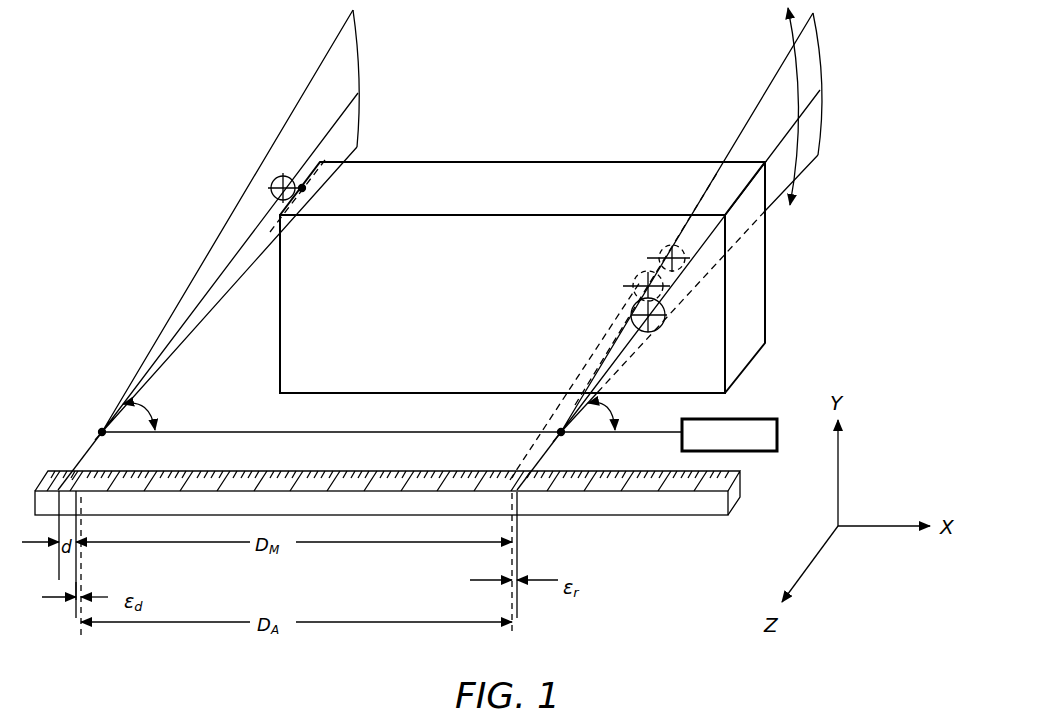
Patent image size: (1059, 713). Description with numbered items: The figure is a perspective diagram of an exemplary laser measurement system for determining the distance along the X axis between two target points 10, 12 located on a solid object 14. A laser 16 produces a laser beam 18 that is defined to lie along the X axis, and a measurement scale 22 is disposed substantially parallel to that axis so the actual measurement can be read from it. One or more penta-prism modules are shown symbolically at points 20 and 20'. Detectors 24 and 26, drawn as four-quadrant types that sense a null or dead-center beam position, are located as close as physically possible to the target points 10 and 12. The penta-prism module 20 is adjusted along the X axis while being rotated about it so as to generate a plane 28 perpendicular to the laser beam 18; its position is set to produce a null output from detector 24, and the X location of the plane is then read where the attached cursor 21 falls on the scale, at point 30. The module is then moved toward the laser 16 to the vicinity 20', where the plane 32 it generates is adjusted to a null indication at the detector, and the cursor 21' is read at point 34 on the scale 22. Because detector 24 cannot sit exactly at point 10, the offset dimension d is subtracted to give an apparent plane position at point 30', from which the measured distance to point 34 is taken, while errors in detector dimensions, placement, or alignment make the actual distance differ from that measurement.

The target point 10 is at (305, 188).
The target point 12 is at (664, 258).
The solid object 14 is at (516, 176).
The laser 16 is at (742, 414).
The laser beam 18 is at (421, 433).
The penta-prism module 20 is at (139, 406).
The penta-prism module 20' is at (609, 433).
The cursor 21 is at (76, 420).
The cursor 21' is at (530, 427).
The measurement scale 22 is at (653, 508).
The detector 24 is at (271, 188).
The detector 26 is at (664, 319).
The plane 28 is at (318, 89).
The point 30 is at (63, 453).
The point 30' is at (53, 616).
The plane 32 is at (774, 93).
The point 34 is at (528, 472).